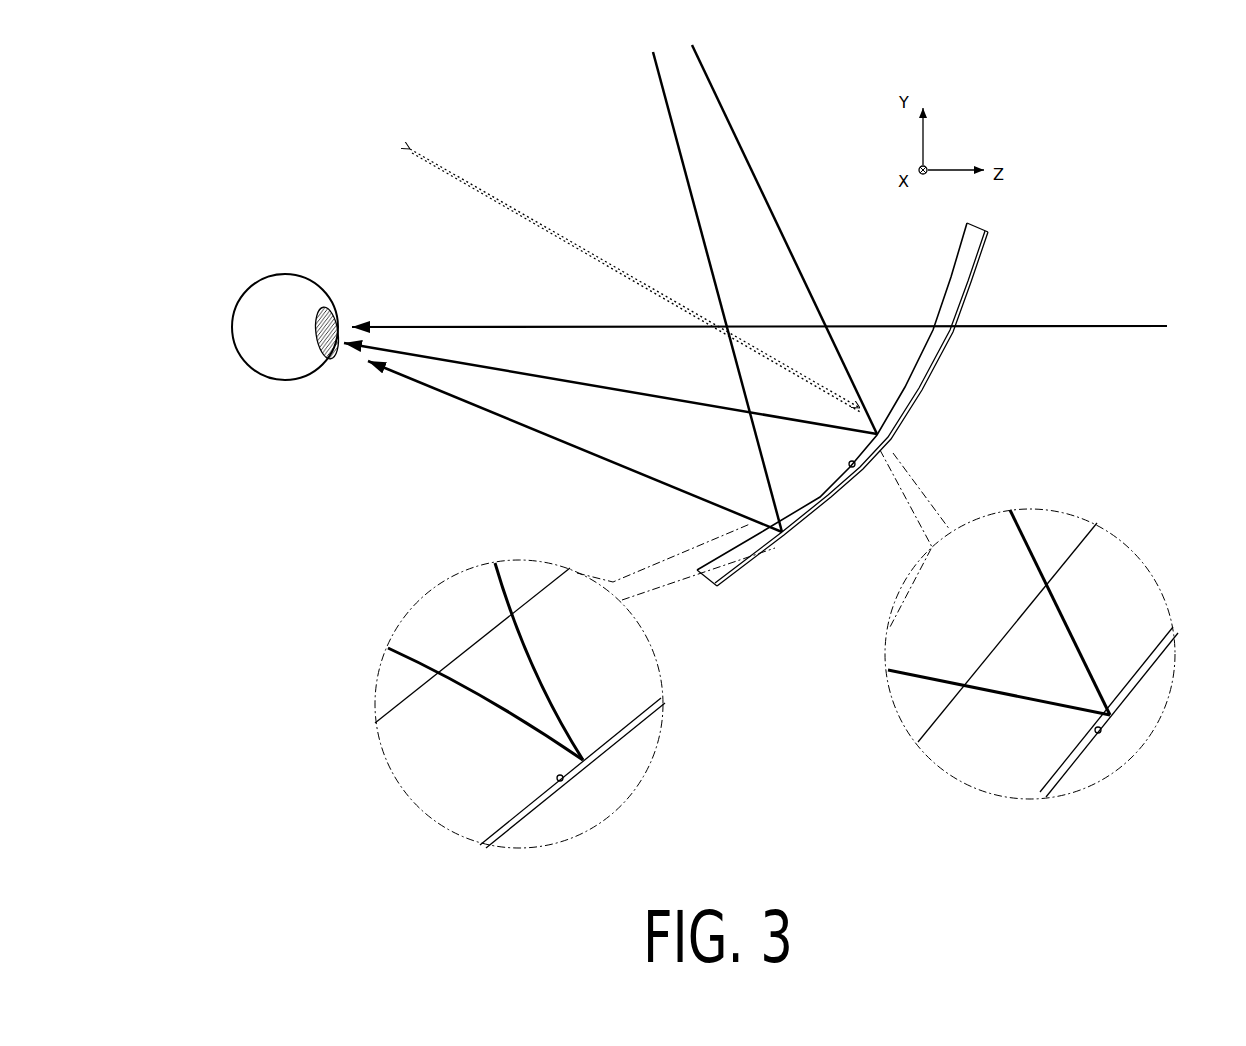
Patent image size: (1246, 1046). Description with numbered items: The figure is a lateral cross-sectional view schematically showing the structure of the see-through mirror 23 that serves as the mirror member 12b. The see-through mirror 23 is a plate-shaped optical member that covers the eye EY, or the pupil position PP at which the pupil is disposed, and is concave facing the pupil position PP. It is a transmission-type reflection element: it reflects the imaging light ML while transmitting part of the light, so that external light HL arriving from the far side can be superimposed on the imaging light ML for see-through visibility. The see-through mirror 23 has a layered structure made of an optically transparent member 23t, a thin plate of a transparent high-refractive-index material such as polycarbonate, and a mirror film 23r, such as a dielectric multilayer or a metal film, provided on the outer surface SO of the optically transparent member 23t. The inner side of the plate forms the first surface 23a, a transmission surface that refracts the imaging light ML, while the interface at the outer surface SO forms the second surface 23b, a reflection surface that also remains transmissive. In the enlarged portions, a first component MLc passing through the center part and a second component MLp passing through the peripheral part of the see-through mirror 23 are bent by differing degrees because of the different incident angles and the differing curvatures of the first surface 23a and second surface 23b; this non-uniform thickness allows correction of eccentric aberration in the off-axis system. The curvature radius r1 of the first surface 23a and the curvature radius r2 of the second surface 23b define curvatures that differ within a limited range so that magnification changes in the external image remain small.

The see-through mirror 23 is at (789, 535).
The optically transparent member 23t is at (913, 368).
The mirror film 23r is at (940, 360).
The first surface 23a is at (843, 447).
The second surface 23b is at (857, 478).
The mirror member 12b is at (1029, 378).
The outer surface SO is at (855, 468).
The external light HL is at (460, 322).
The eye EY is at (278, 368).
The pupil position PP is at (322, 372).
The imaging light ML is at (610, 288).
The first component MLc is at (640, 398).
The second component MLp is at (507, 420).
The curvature radius of the first surface r1 is at (523, 212).
The curvature radius of the second surface r2 is at (457, 185).